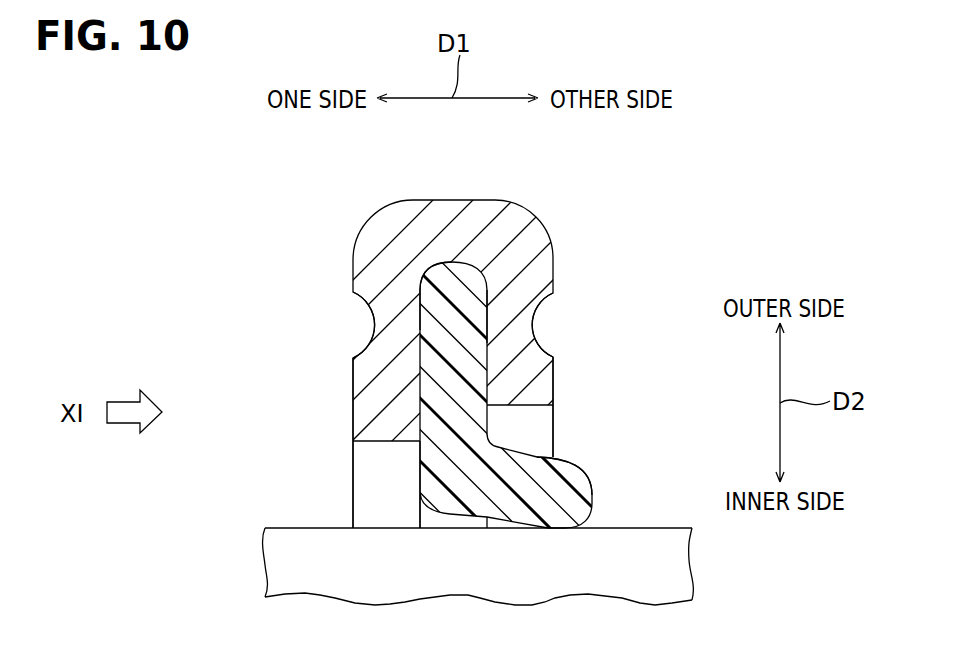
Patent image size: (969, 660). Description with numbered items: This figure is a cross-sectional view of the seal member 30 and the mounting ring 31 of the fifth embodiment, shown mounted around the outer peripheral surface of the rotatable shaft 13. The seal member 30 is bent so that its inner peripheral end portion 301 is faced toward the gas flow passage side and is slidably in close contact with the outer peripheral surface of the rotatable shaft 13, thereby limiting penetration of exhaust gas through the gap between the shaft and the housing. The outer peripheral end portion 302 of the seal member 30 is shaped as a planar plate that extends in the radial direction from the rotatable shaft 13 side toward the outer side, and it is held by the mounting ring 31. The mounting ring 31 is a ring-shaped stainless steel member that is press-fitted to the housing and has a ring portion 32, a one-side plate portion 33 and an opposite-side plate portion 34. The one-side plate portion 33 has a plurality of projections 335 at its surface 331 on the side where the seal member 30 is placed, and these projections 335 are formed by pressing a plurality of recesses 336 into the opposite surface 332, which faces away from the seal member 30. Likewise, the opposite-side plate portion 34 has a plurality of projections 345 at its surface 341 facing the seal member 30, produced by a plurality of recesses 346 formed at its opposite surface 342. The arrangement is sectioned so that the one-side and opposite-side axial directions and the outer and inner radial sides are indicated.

The rotatable shaft 13 is at (285, 560).
The seal member 30 is at (602, 500).
The inner peripheral end portion 301 is at (525, 487).
The outer peripheral end portion 302 is at (417, 258).
The mounting ring 31 is at (536, 196).
The ring portion 32 is at (468, 235).
The one-side plate portion 33 is at (375, 397).
The surface of one-side plate portion 331 is at (420, 385).
The opposite surface of one-side plate portion 332 is at (355, 372).
The projections 335 is at (420, 323).
The recesses 336 is at (372, 322).
The opposite-side plate portion 34 is at (532, 367).
The surface of opposite-side plate portion 341 is at (497, 398).
The opposite surface of opposite-side plate portion 342 is at (487, 343).
The projections 345 is at (487, 316).
The recesses 346 is at (535, 328).